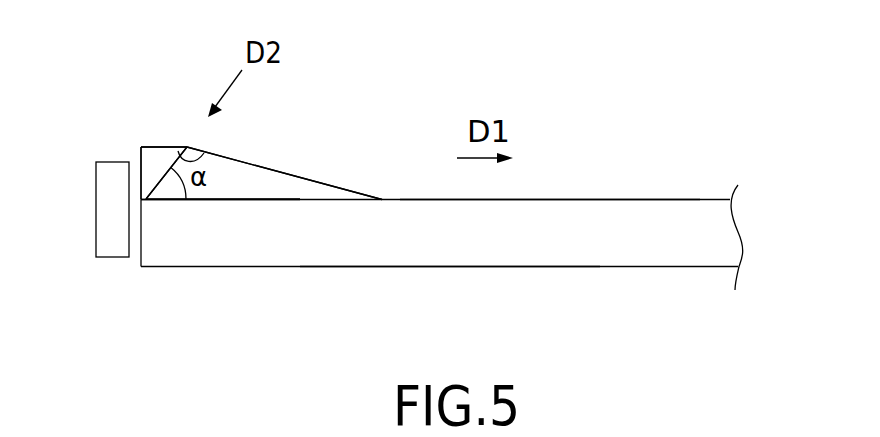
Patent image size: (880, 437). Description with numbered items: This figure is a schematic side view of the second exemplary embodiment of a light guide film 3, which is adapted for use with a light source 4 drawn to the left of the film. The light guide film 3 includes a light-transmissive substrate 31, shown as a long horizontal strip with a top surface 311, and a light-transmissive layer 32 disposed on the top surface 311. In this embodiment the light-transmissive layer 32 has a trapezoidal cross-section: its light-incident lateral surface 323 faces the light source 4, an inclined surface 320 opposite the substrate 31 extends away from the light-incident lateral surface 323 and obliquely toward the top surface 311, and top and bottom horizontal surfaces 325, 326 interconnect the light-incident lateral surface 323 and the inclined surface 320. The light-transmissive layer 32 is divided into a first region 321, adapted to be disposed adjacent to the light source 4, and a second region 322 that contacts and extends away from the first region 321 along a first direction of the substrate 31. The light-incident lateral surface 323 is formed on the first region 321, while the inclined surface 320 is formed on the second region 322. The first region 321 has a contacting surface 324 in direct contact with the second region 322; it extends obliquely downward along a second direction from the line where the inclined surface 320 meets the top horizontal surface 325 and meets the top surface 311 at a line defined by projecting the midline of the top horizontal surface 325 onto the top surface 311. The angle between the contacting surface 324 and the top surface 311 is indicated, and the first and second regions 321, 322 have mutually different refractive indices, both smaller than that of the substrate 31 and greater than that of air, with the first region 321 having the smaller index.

The light guide film 3 is at (670, 178).
The light-transmissive substrate 31 is at (577, 240).
The top surface 311 is at (582, 200).
The light-transmissive layer 32 is at (140, 126).
The inclined surface 320 is at (332, 180).
The first region 321 is at (157, 157).
The second region 322 is at (272, 189).
The light-incident lateral surface 323 is at (141, 155).
The contacting surface 324 is at (208, 153).
The top horizontal surface 325 is at (175, 147).
The bottom horizontal surface 326 is at (224, 199).
The light source 4 is at (104, 193).